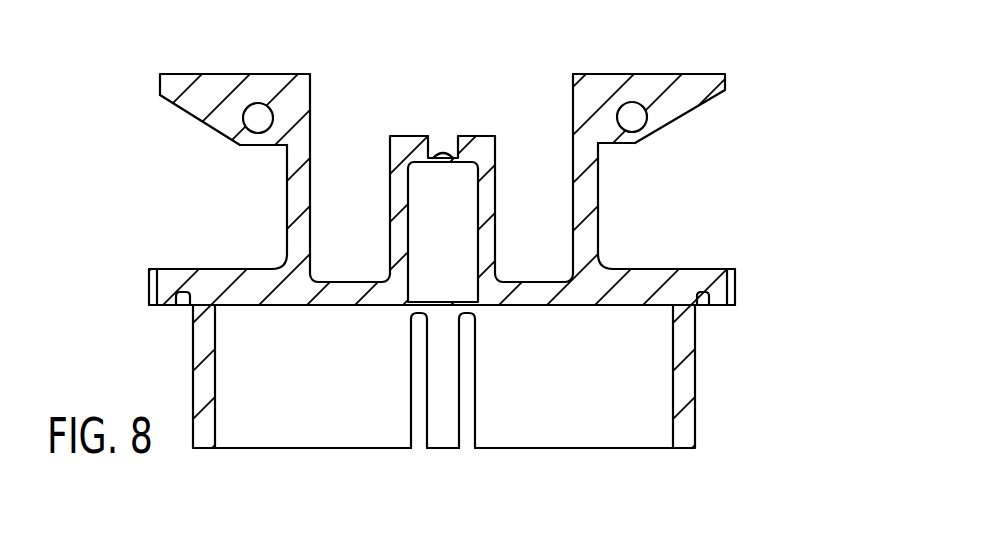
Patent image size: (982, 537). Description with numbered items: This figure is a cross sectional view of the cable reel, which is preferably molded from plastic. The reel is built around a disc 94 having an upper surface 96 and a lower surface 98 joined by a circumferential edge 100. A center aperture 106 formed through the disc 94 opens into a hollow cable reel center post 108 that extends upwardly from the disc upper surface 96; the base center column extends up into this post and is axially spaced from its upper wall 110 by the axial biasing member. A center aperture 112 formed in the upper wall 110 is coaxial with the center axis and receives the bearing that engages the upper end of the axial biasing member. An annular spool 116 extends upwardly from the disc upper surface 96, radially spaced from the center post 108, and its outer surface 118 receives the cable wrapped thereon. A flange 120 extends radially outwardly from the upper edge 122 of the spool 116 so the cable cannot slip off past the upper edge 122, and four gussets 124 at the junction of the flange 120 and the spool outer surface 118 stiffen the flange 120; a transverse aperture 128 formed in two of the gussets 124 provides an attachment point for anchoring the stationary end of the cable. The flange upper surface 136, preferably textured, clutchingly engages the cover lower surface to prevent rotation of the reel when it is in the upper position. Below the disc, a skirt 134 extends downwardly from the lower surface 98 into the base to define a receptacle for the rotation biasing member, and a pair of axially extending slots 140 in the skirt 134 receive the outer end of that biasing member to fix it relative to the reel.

The disc 94 is at (660, 280).
The upper surface 96 is at (620, 267).
The lower surface 98 is at (618, 306).
The circumferential edge 100 is at (737, 281).
The center aperture 106 is at (413, 318).
The cable reel center post 108 is at (495, 133).
The upper wall 110 is at (410, 143).
The center aperture 112 is at (441, 140).
The annular spool 116 is at (600, 187).
The outer surface 118 is at (288, 193).
The flange 120 is at (600, 83).
The upper edge 122 is at (298, 96).
The gussets 124 is at (218, 131).
The transverse aperture 128 is at (245, 108).
The skirt 134 is at (695, 383).
The upper surface 136 is at (285, 76).
The axially extending slots 140 is at (470, 443).